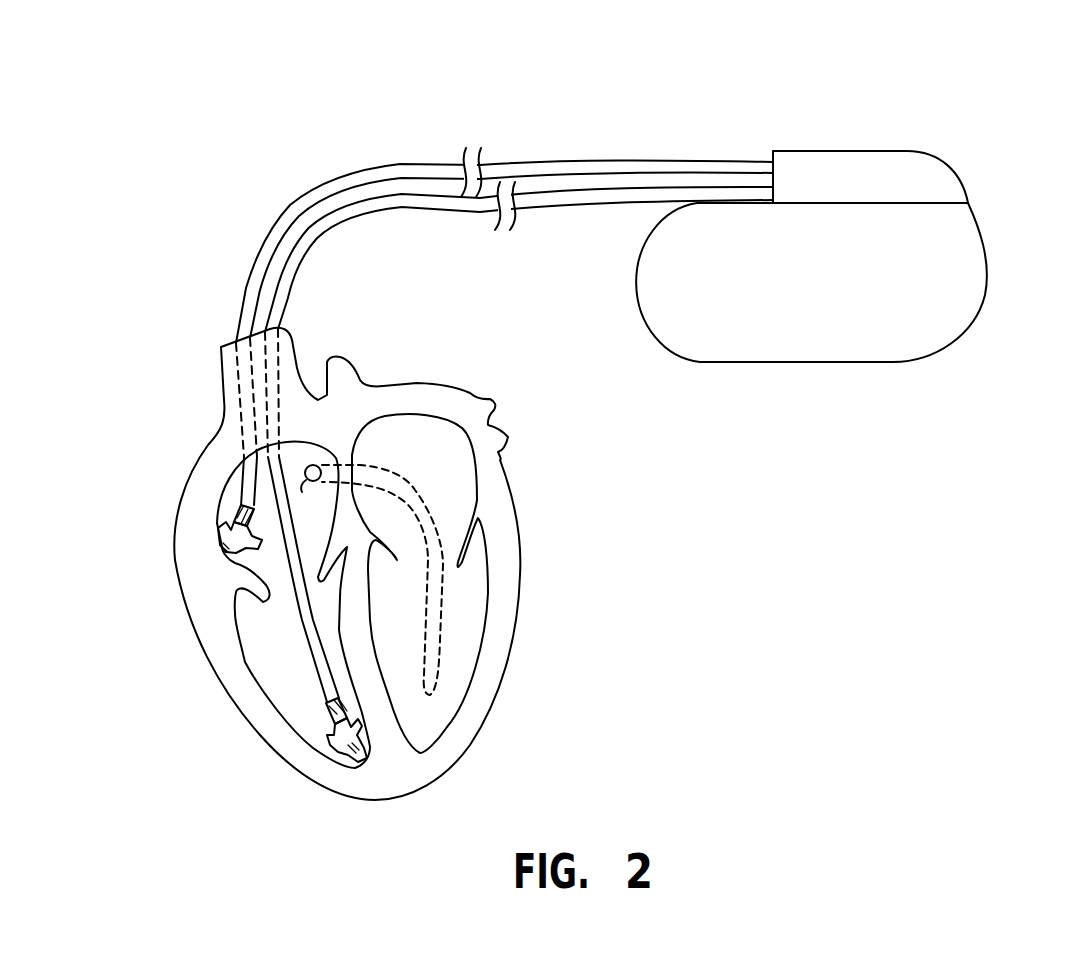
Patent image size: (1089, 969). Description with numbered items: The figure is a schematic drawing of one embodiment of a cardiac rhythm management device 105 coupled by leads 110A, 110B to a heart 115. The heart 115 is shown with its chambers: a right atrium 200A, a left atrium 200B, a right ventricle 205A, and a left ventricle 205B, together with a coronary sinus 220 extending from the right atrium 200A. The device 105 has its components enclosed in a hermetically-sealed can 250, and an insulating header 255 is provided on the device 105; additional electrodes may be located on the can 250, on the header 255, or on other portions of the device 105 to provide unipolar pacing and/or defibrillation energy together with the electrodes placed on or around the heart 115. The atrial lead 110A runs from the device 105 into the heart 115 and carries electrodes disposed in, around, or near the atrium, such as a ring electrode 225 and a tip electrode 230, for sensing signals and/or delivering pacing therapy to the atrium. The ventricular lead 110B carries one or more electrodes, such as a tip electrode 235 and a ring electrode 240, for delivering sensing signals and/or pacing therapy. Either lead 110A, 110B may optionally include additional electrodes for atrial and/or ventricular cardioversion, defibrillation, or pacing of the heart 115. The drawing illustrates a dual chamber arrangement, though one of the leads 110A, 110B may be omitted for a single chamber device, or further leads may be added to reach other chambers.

The device 105 is at (856, 193).
The insulating header 255 is at (957, 175).
The hermetically-sealed can 250 is at (987, 250).
The atrial lead 110A is at (390, 178).
The ventricular lead 110B is at (410, 227).
The heart 115 is at (520, 598).
The right atrium 200A is at (232, 568).
The left atrium 200B is at (452, 467).
The right ventricle 205A is at (270, 638).
The left ventricle 205B is at (458, 657).
The coronary sinus 220 is at (365, 580).
The ring electrode 225 is at (238, 510).
The tip electrode 230 is at (220, 547).
The ring electrode 240 is at (327, 720).
The tip electrode 235 is at (352, 756).